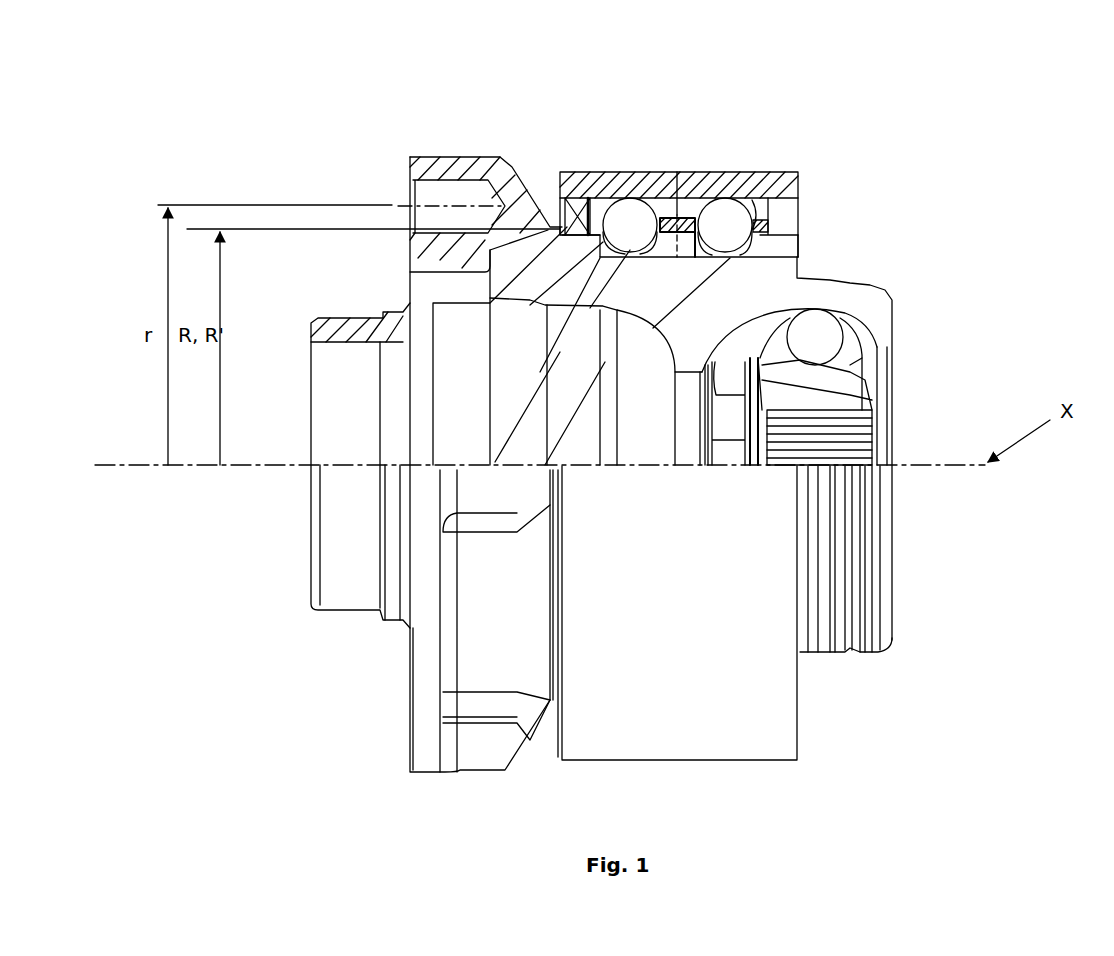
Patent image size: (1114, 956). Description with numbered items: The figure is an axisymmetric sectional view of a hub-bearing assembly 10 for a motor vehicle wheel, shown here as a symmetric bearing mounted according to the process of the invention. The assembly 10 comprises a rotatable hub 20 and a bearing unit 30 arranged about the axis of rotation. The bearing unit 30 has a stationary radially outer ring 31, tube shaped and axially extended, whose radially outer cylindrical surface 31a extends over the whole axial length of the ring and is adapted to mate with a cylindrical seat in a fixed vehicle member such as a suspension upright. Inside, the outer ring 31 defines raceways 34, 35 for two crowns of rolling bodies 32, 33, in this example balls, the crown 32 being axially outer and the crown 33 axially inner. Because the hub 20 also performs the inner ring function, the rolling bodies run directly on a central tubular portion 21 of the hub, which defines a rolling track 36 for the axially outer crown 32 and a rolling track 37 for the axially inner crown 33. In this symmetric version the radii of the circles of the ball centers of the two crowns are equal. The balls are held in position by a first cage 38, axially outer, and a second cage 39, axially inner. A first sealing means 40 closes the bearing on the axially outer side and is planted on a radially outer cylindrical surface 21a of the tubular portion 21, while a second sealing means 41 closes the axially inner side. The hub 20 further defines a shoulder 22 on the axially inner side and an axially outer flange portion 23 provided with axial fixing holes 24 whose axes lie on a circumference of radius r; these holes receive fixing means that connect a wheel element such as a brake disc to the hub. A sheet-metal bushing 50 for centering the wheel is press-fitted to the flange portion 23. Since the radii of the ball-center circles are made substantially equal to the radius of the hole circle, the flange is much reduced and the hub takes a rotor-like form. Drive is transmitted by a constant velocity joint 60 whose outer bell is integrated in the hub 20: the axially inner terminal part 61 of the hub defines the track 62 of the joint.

The hub-bearing assembly 10 is at (1012, 192).
The rotatable hub 20 is at (447, 138).
The central tubular portion 21 is at (580, 255).
The radially outer cylindrical surface 21a is at (553, 226).
The shoulder 22 is at (778, 253).
The flange portion 23 is at (440, 165).
The axial fixing holes 24 is at (443, 183).
The bearing unit 30 is at (852, 171).
The radially outer ring 31 is at (652, 212).
The radially outer cylindrical surface 31a is at (709, 169).
The axially outer crown of rolling bodies 32 is at (630, 249).
The axially inner crown of rolling bodies 33 is at (724, 199).
The raceway 34 is at (582, 220).
The raceway 35 is at (766, 222).
The rolling track 36 is at (588, 226).
The rolling track 37 is at (768, 226).
The first cage 38 is at (677, 170).
The second cage 39 is at (767, 218).
The first sealing means 40 is at (558, 227).
The second sealing means 41 is at (770, 218).
The bushing 50 is at (370, 330).
The constant velocity joint 60 is at (950, 404).
The axially inner terminal part 61 is at (842, 293).
The track of the joint 62 is at (860, 307).